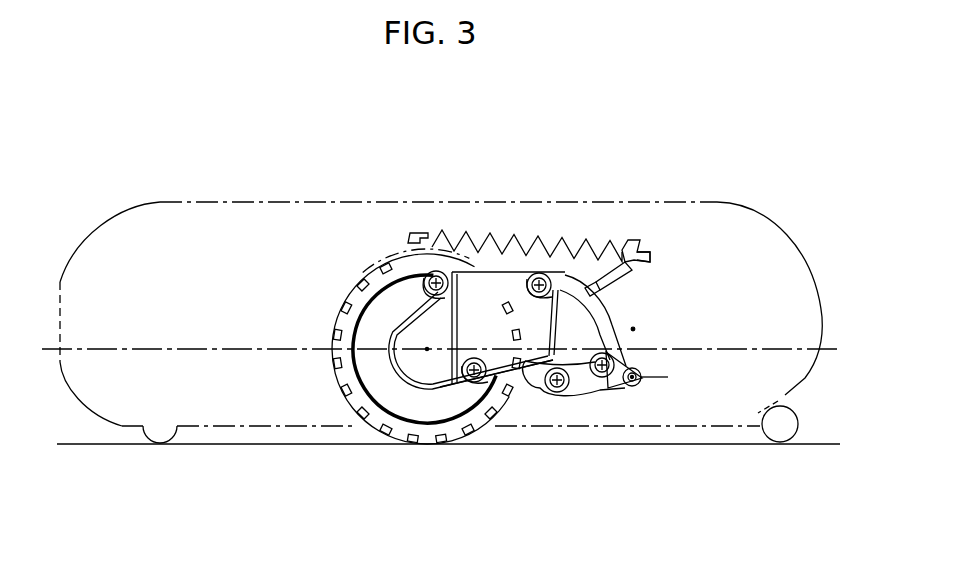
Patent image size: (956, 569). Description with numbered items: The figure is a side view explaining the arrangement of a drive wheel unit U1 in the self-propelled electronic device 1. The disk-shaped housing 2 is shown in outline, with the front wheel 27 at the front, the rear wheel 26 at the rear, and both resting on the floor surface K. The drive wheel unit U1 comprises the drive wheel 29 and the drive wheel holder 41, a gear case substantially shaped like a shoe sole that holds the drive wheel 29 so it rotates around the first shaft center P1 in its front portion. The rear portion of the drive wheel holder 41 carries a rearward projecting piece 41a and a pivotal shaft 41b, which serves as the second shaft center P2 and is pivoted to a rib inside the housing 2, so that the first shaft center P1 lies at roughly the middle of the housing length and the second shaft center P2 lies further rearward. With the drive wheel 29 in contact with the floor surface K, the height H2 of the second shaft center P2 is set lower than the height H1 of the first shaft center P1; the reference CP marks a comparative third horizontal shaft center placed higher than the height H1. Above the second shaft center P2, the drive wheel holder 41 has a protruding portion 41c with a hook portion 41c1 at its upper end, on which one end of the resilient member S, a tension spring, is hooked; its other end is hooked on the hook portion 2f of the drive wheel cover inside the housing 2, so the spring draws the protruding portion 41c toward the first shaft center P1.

The self-propelled electronic device 1 is at (543, 157).
The housing 2 is at (158, 201).
The hook portion 2f is at (419, 233).
The rear wheel 26 is at (798, 418).
The front wheel 27 is at (160, 446).
The drive wheel 29 is at (350, 290).
The drive wheel holder 41 is at (430, 381).
The rearward projecting piece 41a is at (620, 387).
The pivotal shaft 41b is at (637, 372).
The protruding portion 41c is at (633, 240).
The hook portion 41c1 is at (648, 253).
The resilient member S is at (507, 240).
The third horizontal shaft center CP is at (633, 329).
The floor surface K is at (82, 444).
The first shaft center P1 is at (427, 349).
The second shaft center P2 is at (632, 387).
The drive wheel unit U1 is at (532, 403).
The height of the first shaft center H1 is at (707, 350).
The height of the second shaft center H2 is at (657, 378).